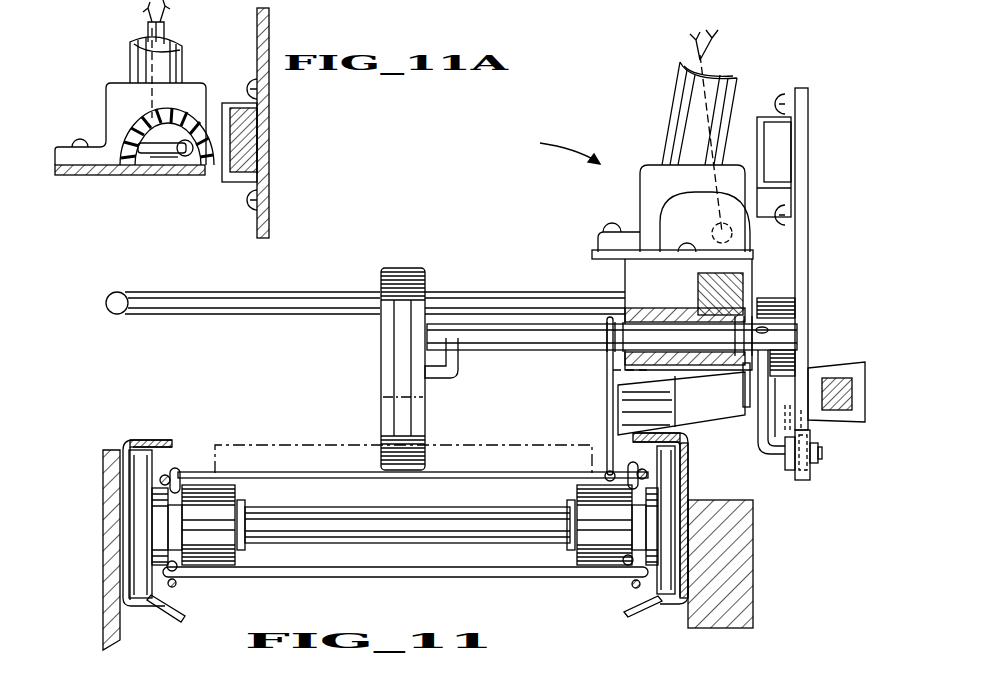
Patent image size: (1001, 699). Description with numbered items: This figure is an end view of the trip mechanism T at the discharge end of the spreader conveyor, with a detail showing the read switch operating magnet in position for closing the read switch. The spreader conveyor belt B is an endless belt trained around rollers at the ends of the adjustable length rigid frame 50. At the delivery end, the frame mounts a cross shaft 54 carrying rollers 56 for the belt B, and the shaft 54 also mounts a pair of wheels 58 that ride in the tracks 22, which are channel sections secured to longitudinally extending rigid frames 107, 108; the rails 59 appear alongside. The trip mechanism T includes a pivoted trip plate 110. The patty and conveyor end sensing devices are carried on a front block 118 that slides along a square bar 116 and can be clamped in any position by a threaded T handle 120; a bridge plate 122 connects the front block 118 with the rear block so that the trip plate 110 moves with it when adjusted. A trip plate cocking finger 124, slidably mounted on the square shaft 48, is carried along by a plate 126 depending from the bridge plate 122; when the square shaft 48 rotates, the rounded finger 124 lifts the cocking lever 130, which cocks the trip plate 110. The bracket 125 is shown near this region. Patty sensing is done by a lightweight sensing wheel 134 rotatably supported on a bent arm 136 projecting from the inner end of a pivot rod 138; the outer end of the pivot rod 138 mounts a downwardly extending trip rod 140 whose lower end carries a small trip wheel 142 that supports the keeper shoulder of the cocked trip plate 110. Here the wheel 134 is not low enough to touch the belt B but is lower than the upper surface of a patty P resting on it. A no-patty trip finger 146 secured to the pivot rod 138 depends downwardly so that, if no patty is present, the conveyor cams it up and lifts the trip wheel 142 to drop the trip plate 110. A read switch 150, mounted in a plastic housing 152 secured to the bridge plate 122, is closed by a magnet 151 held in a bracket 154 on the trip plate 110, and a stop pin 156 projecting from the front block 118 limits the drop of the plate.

In FIG. 11, the tracks 22 is at (130, 438).
In FIG. 11, the square shaft 48 is at (838, 411).
In FIG. 11, the frame 50 is at (405, 526).
In FIG. 11, the cross shaft 54 is at (464, 508).
In FIG. 11, the rollers 56 is at (215, 566).
In FIG. 11, the wheels 58 is at (147, 596).
In FIG. 11, the frame rail 59 is at (466, 472).
In FIG. 11, the longitudinal rigid frame 107 is at (722, 500).
In FIG. 11, the longitudinal rigid frame 108 is at (103, 505).
In FIG. 11A, the trip plate 110 is at (270, 163).
In FIG. 11, the trip plate 110 is at (808, 167).
In FIG. 11, the square bar 116 is at (702, 284).
In FIG. 11, the front block 118 is at (625, 270).
In FIG. 11, the T handle 120 is at (210, 292).
In FIG. 11A, the bridge plate 122 is at (100, 175).
In FIG. 11, the bridge plate 122 is at (592, 254).
In FIG. 11, the trip plate cocking finger 124 is at (718, 421).
In FIG. 11, the bracket 125 is at (865, 360).
In FIG. 11, the plate 126 is at (743, 392).
In FIG. 11, the cocking lever 130 is at (605, 368).
In FIG. 11, the sensing wheel 134 is at (420, 405).
In FIG. 11, the bent arm 136 is at (452, 378).
In FIG. 11, the pivot rod 138 is at (493, 338).
In FIG. 11, the trip rod 140 is at (755, 448).
In FIG. 11, the trip wheel 142 is at (803, 480).
In FIG. 11, the no-patty trip finger 146 is at (607, 390).
In FIG. 11A, the read switch 150 is at (185, 158).
In FIG. 11, the read switch 150 is at (712, 229).
In FIG. 11A, the magnet 151 is at (258, 137).
In FIG. 11, the magnet 151 is at (785, 136).
In FIG. 11A, the plastic housing 152 is at (140, 117).
In FIG. 11, the plastic housing 152 is at (668, 207).
In FIG. 11A, the bracket 154 is at (264, 106).
In FIG. 11, the bracket 154 is at (757, 118).
In FIG. 11, the stop pin 156 is at (797, 326).
In FIG. 11, the trip mechanism T is at (561, 147).
In FIG. 11, the spreader conveyor belt B is at (262, 472).
In FIG. 11, the patty P is at (333, 440).